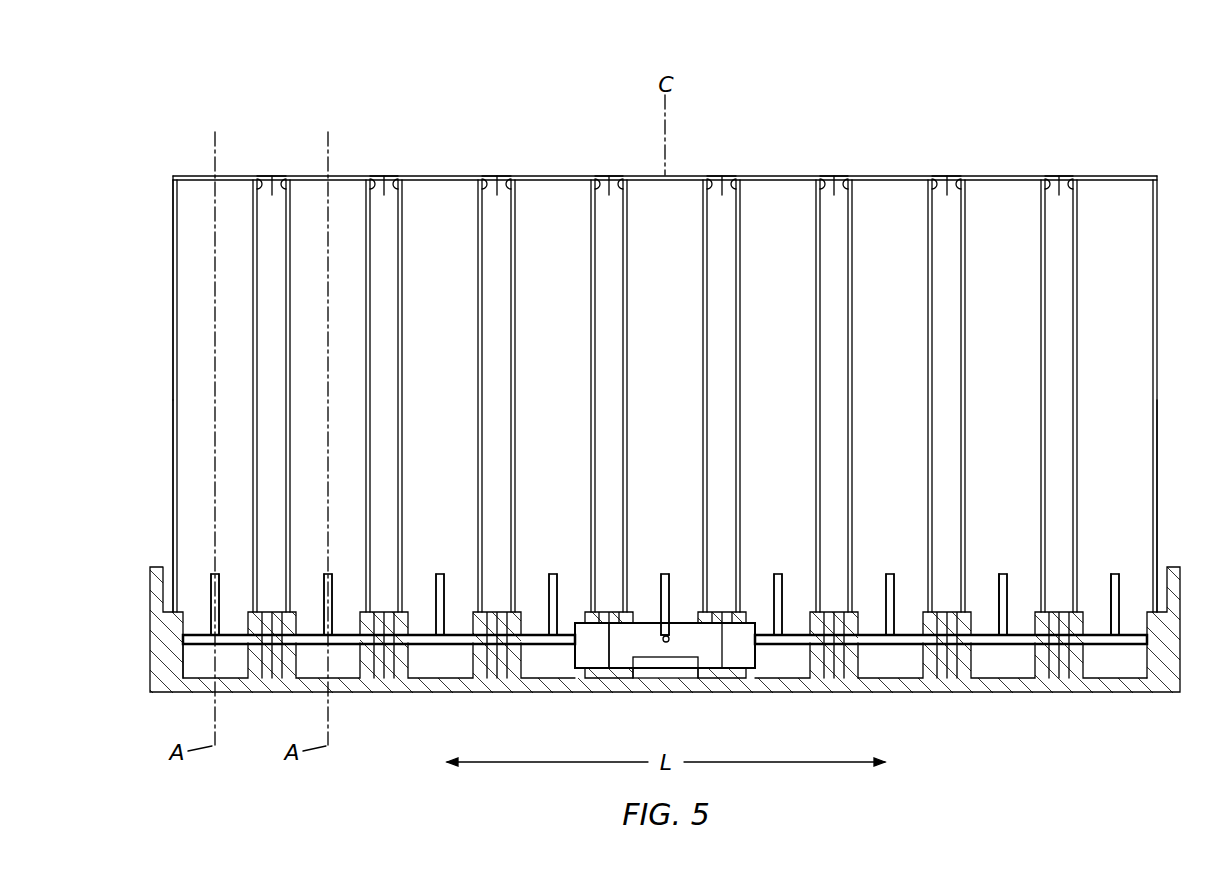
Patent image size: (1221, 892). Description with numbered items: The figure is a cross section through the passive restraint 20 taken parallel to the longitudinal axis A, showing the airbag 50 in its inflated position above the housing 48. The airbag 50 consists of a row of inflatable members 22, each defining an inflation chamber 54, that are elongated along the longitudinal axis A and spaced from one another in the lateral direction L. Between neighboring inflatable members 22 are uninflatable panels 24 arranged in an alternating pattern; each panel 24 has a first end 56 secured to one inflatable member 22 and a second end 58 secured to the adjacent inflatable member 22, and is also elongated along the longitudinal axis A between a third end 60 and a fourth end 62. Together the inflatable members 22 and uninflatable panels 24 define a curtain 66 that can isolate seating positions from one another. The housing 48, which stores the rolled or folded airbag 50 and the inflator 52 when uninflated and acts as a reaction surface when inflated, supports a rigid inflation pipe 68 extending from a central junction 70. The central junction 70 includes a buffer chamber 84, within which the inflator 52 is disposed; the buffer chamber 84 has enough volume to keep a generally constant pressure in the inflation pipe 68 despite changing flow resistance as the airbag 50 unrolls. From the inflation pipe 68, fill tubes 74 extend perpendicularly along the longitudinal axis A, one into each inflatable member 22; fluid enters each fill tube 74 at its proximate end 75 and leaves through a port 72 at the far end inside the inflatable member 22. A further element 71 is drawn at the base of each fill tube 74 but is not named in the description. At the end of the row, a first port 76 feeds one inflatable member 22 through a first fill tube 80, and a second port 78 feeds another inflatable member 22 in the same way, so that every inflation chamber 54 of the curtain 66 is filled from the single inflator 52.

The passive restraint 20 is at (1120, 109).
The inflatable member 22 is at (200, 197).
The uninflatable panel 24 is at (271, 193).
The housing 48 is at (165, 652).
The airbag 50 is at (192, 264).
The inflator 52 is at (652, 657).
The inflation chamber 54 is at (208, 335).
The first end 56 is at (262, 186).
The second end 58 is at (283, 186).
The third end 60 is at (270, 648).
The fourth end 62 is at (275, 176).
The curtain 66 is at (192, 434).
The inflation pipe 68 is at (428, 646).
The central junction 70 is at (575, 668).
The terminal lead 71 is at (210, 583).
The port 72 is at (213, 573).
The fill tube 74 is at (221, 598).
The proximate end 75 is at (212, 634).
The first port 76 is at (1002, 573).
The second port 78 is at (1114, 573).
The first fill tube 80 is at (1010, 590).
The buffer chamber 84 is at (583, 652).